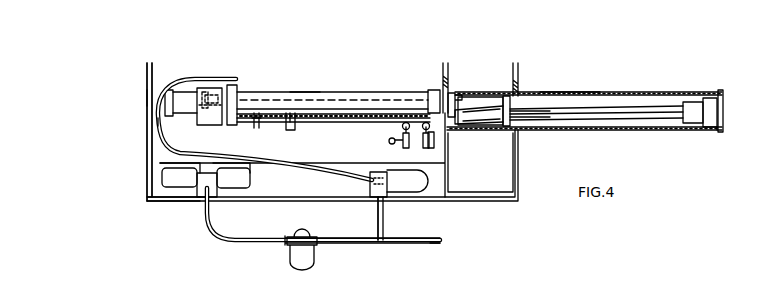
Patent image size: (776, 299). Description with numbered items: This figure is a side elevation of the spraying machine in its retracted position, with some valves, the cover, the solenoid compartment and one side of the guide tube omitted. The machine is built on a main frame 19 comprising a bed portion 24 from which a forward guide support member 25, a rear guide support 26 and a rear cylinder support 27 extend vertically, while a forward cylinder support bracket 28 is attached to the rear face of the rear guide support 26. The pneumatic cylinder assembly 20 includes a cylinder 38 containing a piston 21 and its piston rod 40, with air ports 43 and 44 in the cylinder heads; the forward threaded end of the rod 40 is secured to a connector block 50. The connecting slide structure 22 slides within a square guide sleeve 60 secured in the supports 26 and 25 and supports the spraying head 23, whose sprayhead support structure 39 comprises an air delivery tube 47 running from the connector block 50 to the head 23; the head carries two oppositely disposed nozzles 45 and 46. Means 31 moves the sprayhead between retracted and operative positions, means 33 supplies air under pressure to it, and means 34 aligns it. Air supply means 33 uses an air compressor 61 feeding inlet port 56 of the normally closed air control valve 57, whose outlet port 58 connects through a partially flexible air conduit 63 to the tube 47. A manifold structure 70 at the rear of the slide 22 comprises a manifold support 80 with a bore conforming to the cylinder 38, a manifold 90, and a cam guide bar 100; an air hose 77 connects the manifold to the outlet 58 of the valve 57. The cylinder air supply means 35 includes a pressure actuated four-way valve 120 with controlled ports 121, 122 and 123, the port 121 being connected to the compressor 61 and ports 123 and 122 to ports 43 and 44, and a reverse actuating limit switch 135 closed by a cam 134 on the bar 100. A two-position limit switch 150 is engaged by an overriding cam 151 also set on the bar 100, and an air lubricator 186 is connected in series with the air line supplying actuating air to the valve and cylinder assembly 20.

The main frame 19 is at (472, 203).
The pneumatic cylinder assembly 20 is at (275, 92).
The piston 21 is at (212, 94).
The connecting slide structure 22 is at (512, 99).
The spraying head 23 is at (724, 110).
The bed portion 24 is at (160, 201).
The forward guide support member 25 is at (515, 62).
The rear guide support 26 is at (446, 63).
The rear cylinder support 27 is at (150, 62).
The forward cylinder support bracket 28 is at (428, 92).
The means for moving the sprayhead 31 is at (141, 102).
The means for supplying air under pressure to the sprayhead 33 is at (402, 244).
The means for aligning the sprayhead 34 is at (629, 92).
The means for controlling the cylinder air supply 35 is at (162, 178).
The cylinder 38 is at (303, 92).
The sprayhead support structure 39 is at (586, 107).
The piston rod 40 is at (453, 96).
The air port 43 is at (170, 120).
The air port 44 is at (447, 133).
The spraying nozzle 45 is at (705, 97).
The spraying nozzle 46 is at (709, 129).
The air delivery tube 47 is at (670, 102).
The connector block 50 is at (520, 127).
The inlet port 56 is at (375, 193).
The air control valve 57 is at (404, 193).
The outlet port 58 is at (368, 186).
The guide sleeve 60 is at (562, 92).
The air compressor 61 is at (441, 244).
The air conduit 63 is at (168, 78).
The manifold structure 70 is at (207, 81).
The air hose 77 is at (156, 128).
The manifold support 80 is at (208, 125).
The manifold 90 is at (239, 90).
The cam guide bar 100 is at (342, 107).
The four-way valve 120 is at (222, 200).
The controlled port 121 is at (204, 195).
The controlled port 122 is at (250, 170).
The controlled port 123 is at (159, 166).
The cam 134 is at (257, 129).
The reverse actuating limit switch 135 is at (434, 150).
The limit switch 150 is at (389, 146).
The cam 151 is at (290, 131).
The air lubricator 186 is at (315, 258).